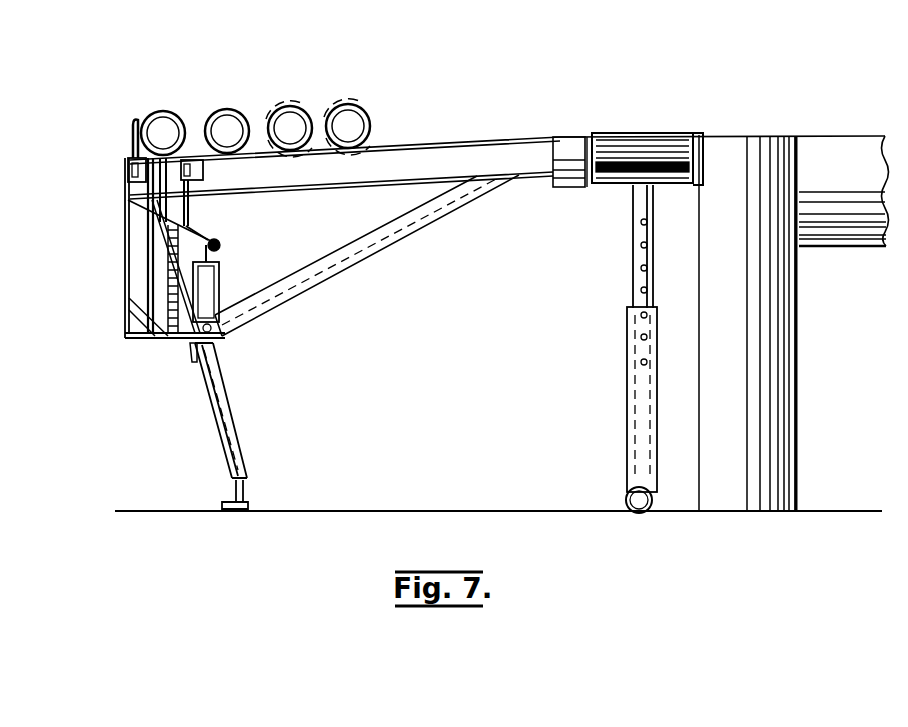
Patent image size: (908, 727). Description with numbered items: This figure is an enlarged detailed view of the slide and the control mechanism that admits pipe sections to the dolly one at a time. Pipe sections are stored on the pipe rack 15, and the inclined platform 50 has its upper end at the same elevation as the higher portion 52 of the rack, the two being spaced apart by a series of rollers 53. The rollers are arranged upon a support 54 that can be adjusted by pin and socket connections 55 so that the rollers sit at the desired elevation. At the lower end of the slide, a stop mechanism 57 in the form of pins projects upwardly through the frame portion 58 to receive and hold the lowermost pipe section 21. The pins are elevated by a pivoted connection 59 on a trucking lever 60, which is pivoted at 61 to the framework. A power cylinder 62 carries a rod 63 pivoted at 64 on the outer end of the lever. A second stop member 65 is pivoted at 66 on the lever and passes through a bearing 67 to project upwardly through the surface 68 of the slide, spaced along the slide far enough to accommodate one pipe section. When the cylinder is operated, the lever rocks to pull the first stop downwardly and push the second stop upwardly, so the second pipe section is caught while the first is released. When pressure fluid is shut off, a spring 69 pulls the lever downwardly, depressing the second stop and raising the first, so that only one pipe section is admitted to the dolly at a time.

The pipe rack 15 is at (834, 247).
The pipe section 21 is at (180, 113).
The inclined platform 50 is at (390, 148).
The higher portion of the pipe rack 52 is at (842, 152).
The rollers 53 is at (640, 134).
The support 54 is at (636, 296).
The pin and socket connections 55 is at (640, 360).
The stop mechanism 57 is at (133, 120).
The frame portion 58 is at (128, 160).
The pivoted connection 59 is at (125, 196).
The trucking lever 60 is at (127, 232).
The pivot 61 is at (124, 246).
The power cylinder 62 is at (220, 282).
The rod 63 is at (222, 246).
The pivot 64 is at (212, 236).
The second stop member 65 is at (206, 210).
The pivot 66 is at (128, 280).
The bearing 67 is at (203, 170).
The surface of the slide 68 is at (193, 152).
The spring 69 is at (175, 248).